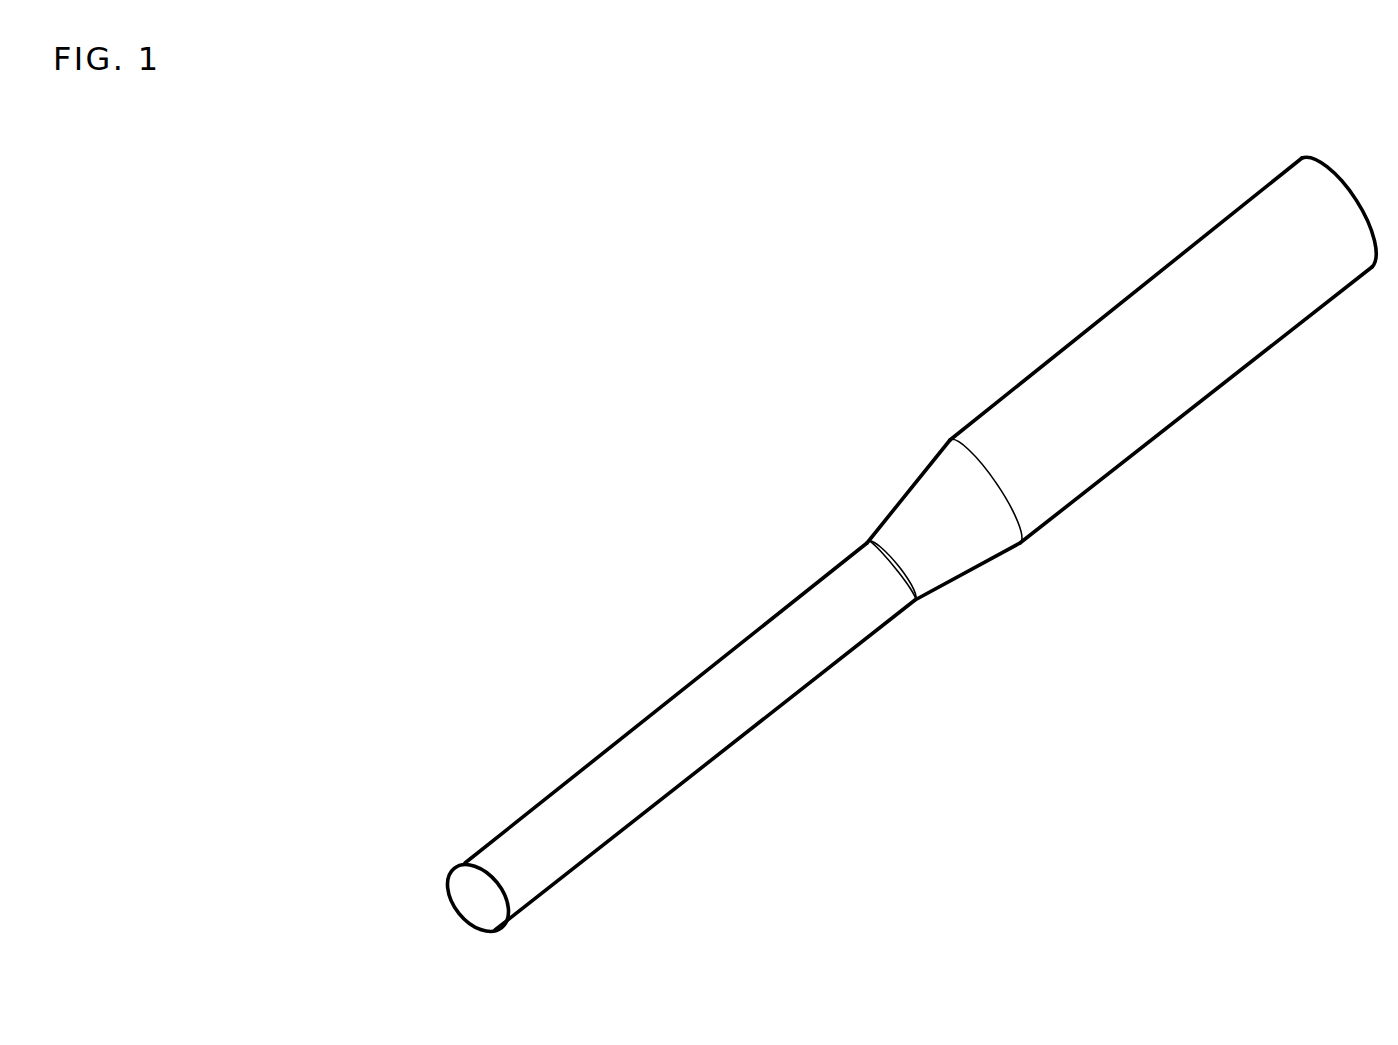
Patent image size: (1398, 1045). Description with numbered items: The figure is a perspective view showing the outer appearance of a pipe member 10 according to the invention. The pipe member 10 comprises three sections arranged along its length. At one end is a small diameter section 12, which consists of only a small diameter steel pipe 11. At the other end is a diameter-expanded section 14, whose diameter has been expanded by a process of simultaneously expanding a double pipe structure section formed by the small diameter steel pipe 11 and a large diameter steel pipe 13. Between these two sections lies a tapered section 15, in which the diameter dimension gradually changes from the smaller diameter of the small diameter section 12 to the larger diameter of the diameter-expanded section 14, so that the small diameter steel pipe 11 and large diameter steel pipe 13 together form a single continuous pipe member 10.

The pipe member 10 is at (628, 363).
The small diameter steel pipe 11 is at (758, 685).
The small diameter section 12 is at (682, 658).
The large diameter steel pipe 13 is at (1197, 358).
The diameter-expanded section 14 is at (1095, 285).
The tapered section 15 is at (903, 450).